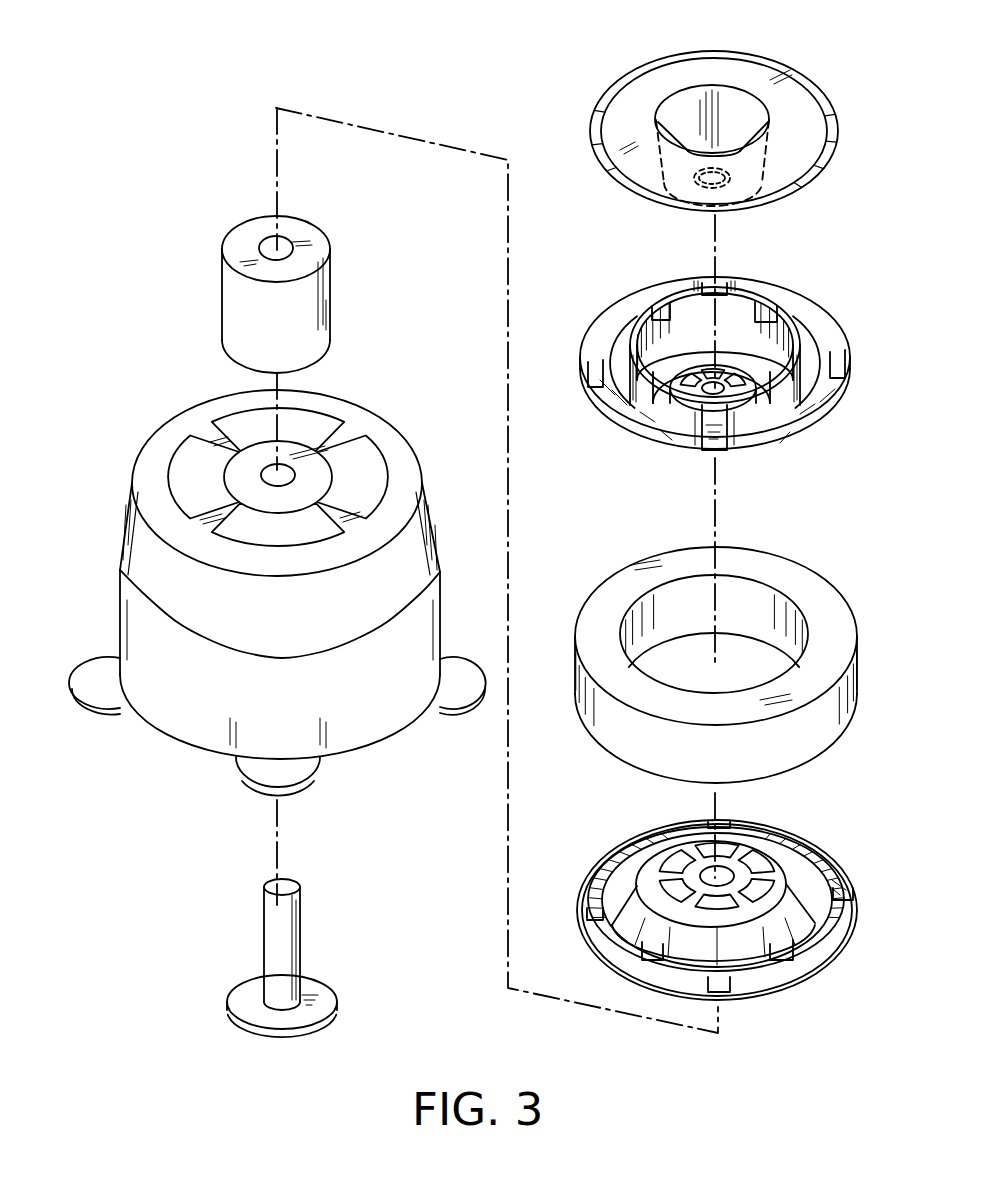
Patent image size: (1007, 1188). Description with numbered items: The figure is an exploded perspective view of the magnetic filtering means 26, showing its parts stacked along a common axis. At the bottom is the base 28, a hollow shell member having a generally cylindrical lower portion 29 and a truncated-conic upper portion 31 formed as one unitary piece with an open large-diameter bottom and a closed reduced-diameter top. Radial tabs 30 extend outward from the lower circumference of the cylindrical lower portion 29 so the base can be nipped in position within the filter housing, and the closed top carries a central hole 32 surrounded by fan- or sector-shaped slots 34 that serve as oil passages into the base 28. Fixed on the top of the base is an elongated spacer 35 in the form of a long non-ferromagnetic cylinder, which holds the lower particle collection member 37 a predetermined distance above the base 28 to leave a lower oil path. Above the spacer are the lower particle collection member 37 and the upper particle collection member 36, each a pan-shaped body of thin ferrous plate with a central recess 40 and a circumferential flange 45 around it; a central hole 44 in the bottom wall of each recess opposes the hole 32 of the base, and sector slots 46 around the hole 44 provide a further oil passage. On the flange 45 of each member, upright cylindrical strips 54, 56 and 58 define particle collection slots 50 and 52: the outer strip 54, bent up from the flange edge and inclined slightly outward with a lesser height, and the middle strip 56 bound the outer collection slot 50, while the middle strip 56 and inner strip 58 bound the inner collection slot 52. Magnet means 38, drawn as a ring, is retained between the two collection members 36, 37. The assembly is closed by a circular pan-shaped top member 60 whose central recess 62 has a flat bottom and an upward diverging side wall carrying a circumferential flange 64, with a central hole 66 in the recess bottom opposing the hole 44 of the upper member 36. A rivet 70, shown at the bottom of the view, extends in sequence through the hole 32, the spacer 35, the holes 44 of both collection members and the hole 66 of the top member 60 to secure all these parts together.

The magnetic filtering means 26 is at (586, 36).
The base 28 is at (430, 487).
The cylindrical lower portion 29 is at (370, 727).
The radial tabs 30 is at (96, 688).
The truncated-conic upper portion 31 is at (425, 535).
The central hole 32 is at (288, 470).
The sector-shaped slots 34 is at (357, 467).
The spacer 35 is at (322, 297).
The upper particle collection member 36 is at (783, 272).
The lower particle collection member 37 is at (813, 982).
The magnet means 38 is at (738, 560).
The central recess 40 is at (747, 338).
The central hole 44 is at (727, 392).
The circumferential flange 45 is at (602, 352).
The sector slots 46 is at (737, 373).
The outer collection slot 50 is at (612, 407).
The inner collection slot 52 is at (613, 322).
The outer strip 54 is at (842, 347).
The middle strip 56 is at (790, 311).
The inner strip 58 is at (787, 373).
The top member 60 is at (796, 59).
The central recess 62 is at (713, 152).
The circumferential flange 64 is at (801, 110).
The central hole 66 is at (727, 184).
The rivet 70 is at (285, 930).